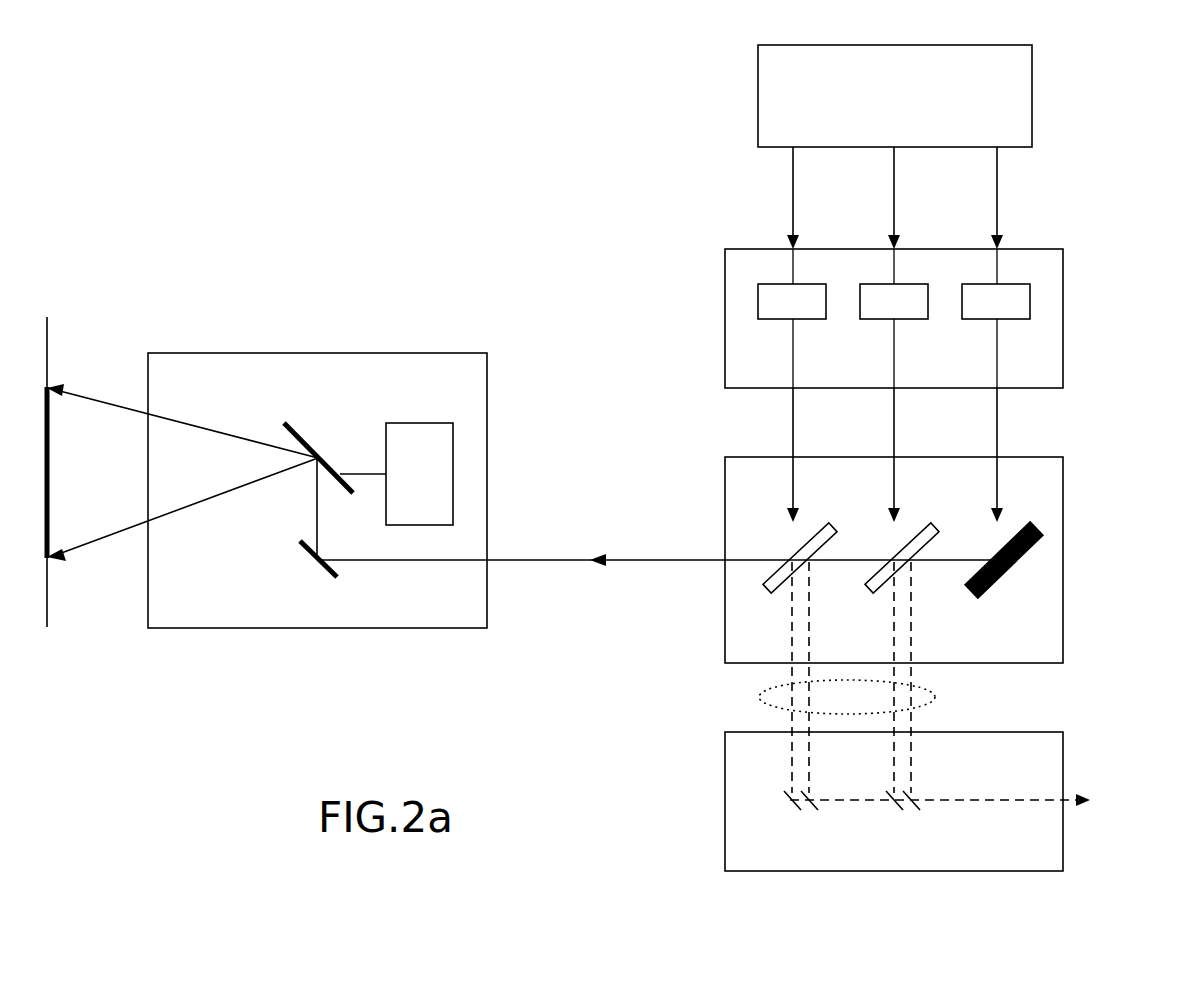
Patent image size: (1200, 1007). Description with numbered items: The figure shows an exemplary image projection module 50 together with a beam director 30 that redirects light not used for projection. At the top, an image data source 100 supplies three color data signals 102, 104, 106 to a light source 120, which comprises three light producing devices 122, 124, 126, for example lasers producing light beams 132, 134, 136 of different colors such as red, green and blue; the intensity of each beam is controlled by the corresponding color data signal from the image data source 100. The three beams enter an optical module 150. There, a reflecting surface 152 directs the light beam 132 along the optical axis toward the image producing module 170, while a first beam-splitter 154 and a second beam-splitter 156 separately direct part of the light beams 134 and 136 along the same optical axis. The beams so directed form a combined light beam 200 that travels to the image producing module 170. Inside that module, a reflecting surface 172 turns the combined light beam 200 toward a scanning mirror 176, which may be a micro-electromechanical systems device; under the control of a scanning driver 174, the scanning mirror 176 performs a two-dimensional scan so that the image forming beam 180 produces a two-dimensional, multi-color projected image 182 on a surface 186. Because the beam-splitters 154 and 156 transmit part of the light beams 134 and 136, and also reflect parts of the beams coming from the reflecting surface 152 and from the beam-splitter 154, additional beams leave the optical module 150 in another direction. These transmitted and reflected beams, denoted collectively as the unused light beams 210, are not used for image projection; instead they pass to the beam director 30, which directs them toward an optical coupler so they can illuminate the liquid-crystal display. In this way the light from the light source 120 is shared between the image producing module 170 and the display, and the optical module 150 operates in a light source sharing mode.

The image projection module 50 is at (540, 208).
The image data source 100 is at (758, 89).
The color data signal 102 is at (997, 213).
The color data signal 104 is at (894, 213).
The color data signal 106 is at (793, 213).
The light source 120 is at (725, 348).
The light producing device 122 is at (1001, 320).
The light producing device 124 is at (900, 320).
The light producing device 126 is at (800, 320).
The light beam 132 is at (997, 447).
The light beam 134 is at (894, 447).
The light beam 136 is at (793, 447).
The optical module 150 is at (725, 491).
The reflecting surface 152 is at (1015, 530).
The first beam-splitter 154 is at (913, 530).
The second beam-splitter 156 is at (811, 530).
The image producing module 170 is at (384, 353).
The reflecting surface 172 is at (323, 571).
The scanning driver 174 is at (394, 423).
The scanning mirror 176 is at (294, 425).
The image forming beam 180 is at (132, 395).
The projected image 182 is at (47, 465).
The surface 186 is at (47, 333).
The combined light beam 200 is at (548, 558).
The unused light beams 210 is at (758, 690).
The beam director 30 is at (725, 791).